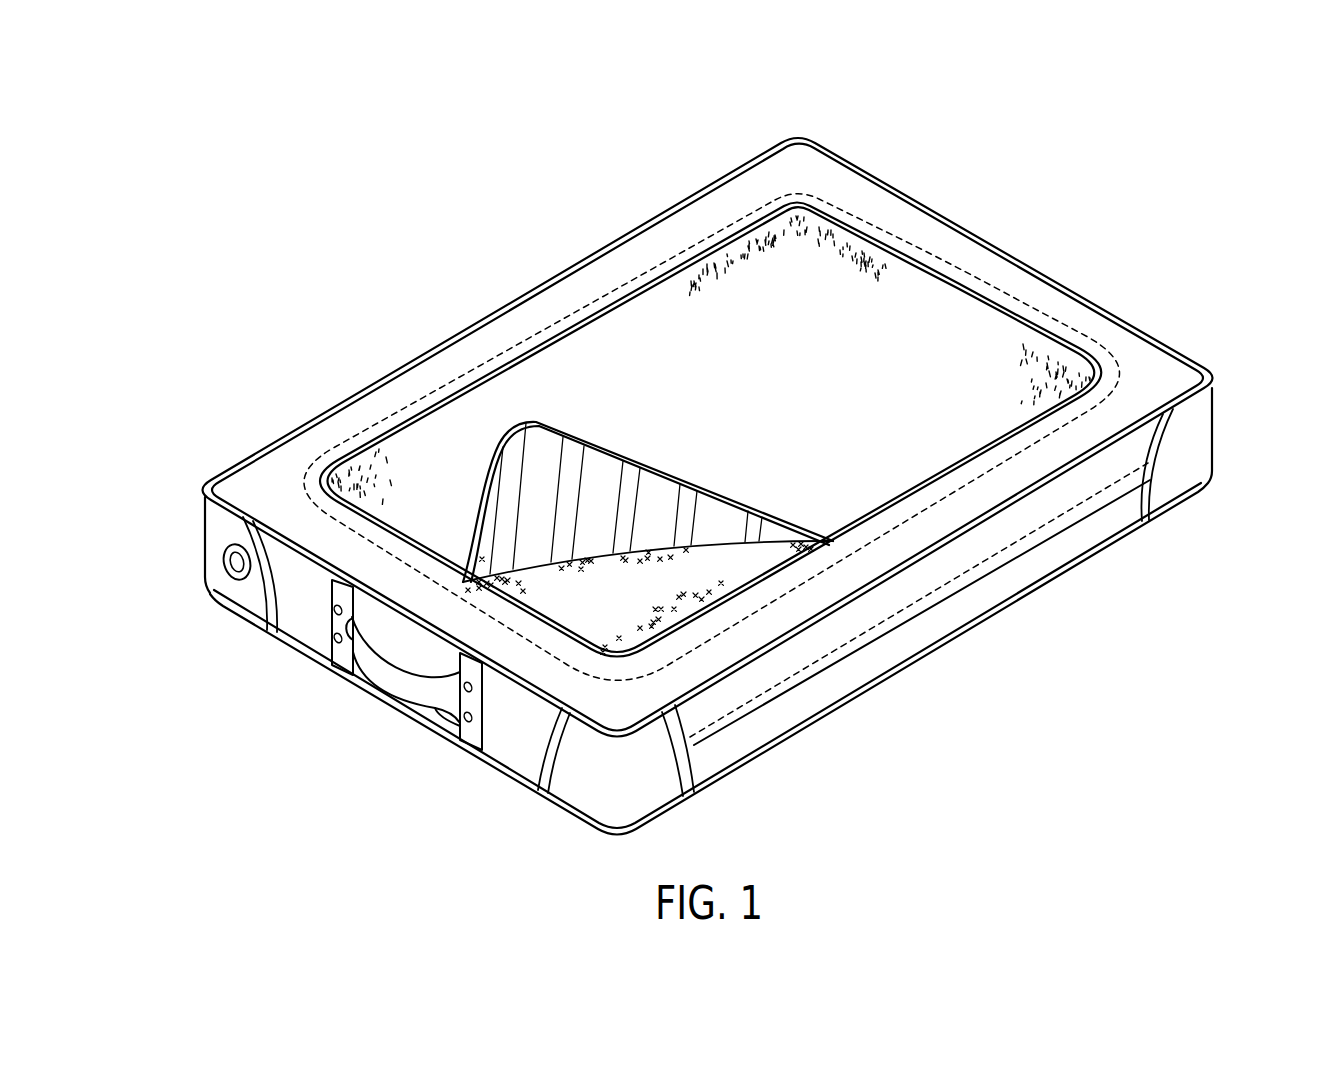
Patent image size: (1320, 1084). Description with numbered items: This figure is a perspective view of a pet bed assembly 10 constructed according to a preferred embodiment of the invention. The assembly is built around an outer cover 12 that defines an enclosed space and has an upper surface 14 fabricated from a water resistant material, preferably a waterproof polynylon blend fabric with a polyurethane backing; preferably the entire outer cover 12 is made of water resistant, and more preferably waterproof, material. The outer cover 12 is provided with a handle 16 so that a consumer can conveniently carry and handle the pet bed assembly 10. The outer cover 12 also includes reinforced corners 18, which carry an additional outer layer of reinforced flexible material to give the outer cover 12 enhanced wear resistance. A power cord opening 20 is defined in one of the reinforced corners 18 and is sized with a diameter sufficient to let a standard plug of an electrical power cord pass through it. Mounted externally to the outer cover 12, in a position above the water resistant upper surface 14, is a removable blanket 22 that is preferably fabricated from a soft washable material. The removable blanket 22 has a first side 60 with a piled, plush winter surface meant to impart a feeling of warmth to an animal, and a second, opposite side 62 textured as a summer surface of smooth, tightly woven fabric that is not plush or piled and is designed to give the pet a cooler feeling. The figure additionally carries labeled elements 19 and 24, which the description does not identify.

The pet bed assembly 10 is at (1176, 199).
The outer cover 12 is at (1067, 540).
The upper surface 14 is at (753, 560).
The handle 16 is at (381, 673).
The reinforced corners 18 is at (1207, 441).
The top edge welt 19 is at (1168, 346).
The power cord opening 20 is at (222, 557).
The removable blanket 22 is at (648, 482).
The mesh liner 24 is at (797, 213).
The first side 60 is at (435, 421).
The second side 62 is at (592, 528).